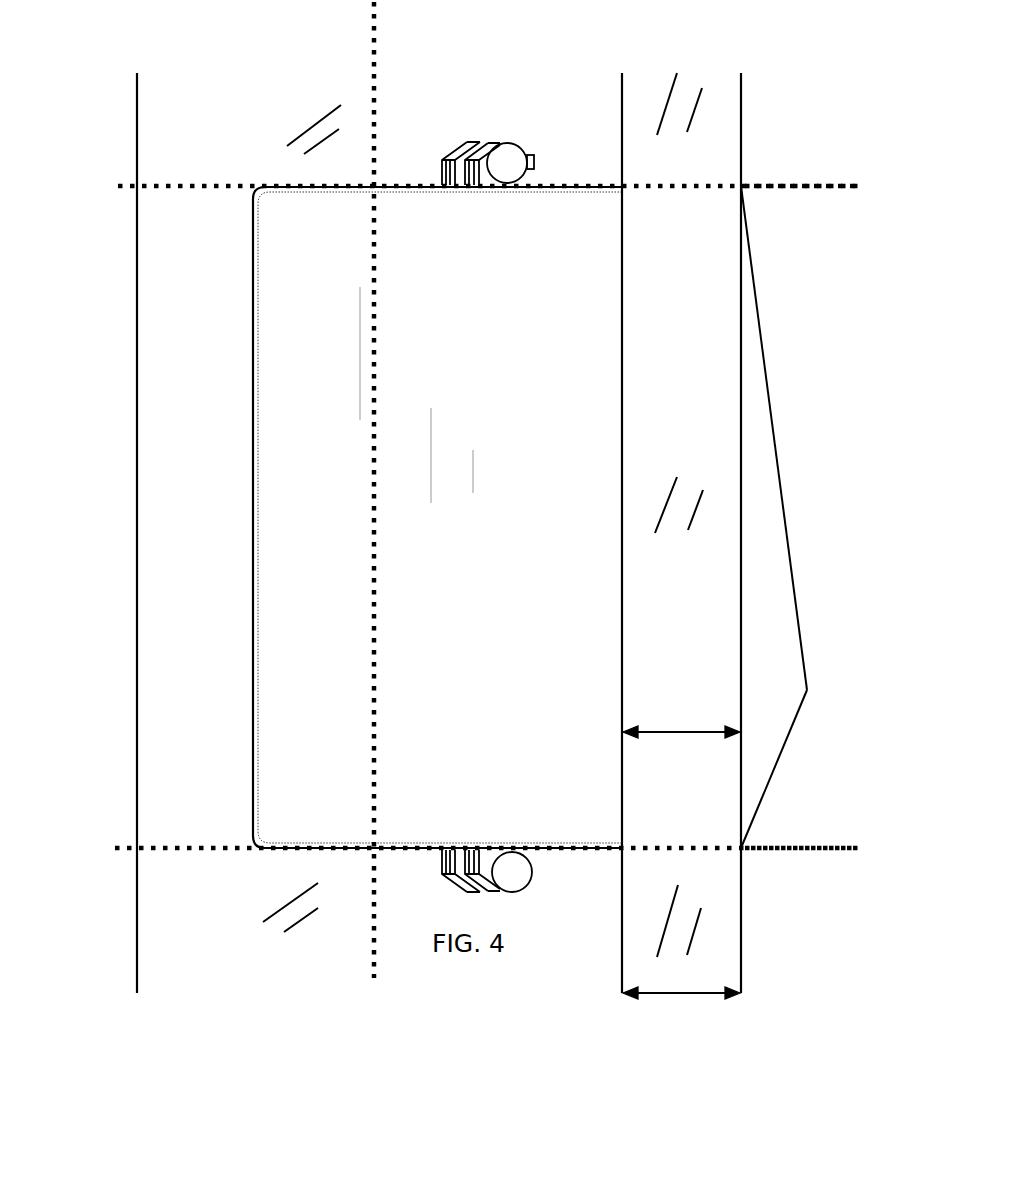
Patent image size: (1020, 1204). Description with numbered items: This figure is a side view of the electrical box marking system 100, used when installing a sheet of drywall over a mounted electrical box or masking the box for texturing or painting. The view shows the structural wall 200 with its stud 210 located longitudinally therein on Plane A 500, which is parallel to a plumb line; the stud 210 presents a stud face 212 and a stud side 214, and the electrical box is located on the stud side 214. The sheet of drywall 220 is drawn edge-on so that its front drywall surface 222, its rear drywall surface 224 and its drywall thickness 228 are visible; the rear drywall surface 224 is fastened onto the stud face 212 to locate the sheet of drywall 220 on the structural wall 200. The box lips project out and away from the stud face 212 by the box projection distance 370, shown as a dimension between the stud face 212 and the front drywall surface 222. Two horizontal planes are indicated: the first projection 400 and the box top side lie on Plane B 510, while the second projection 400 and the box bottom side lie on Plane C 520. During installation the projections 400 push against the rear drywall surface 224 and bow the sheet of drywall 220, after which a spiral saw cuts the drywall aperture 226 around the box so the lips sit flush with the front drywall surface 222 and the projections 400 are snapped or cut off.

The electrical box marking system 100 is at (226, 88).
The structural wall 200 is at (770, 94).
The stud 210 is at (112, 747).
The stud face 212 is at (622, 152).
The stud side 214 is at (178, 362).
The sheet of drywall 220 is at (688, 963).
The front drywall surface 222 is at (741, 922).
The rear drywall surface 224 is at (622, 118).
The drywall aperture 226 is at (803, 517).
The drywall thickness 228 is at (680, 995).
The box projection distance 370 is at (670, 734).
The projection 400 is at (780, 190).
The Plane A 500 is at (377, 40).
The Plane B 510 is at (195, 185).
The Plane C 520 is at (182, 848).